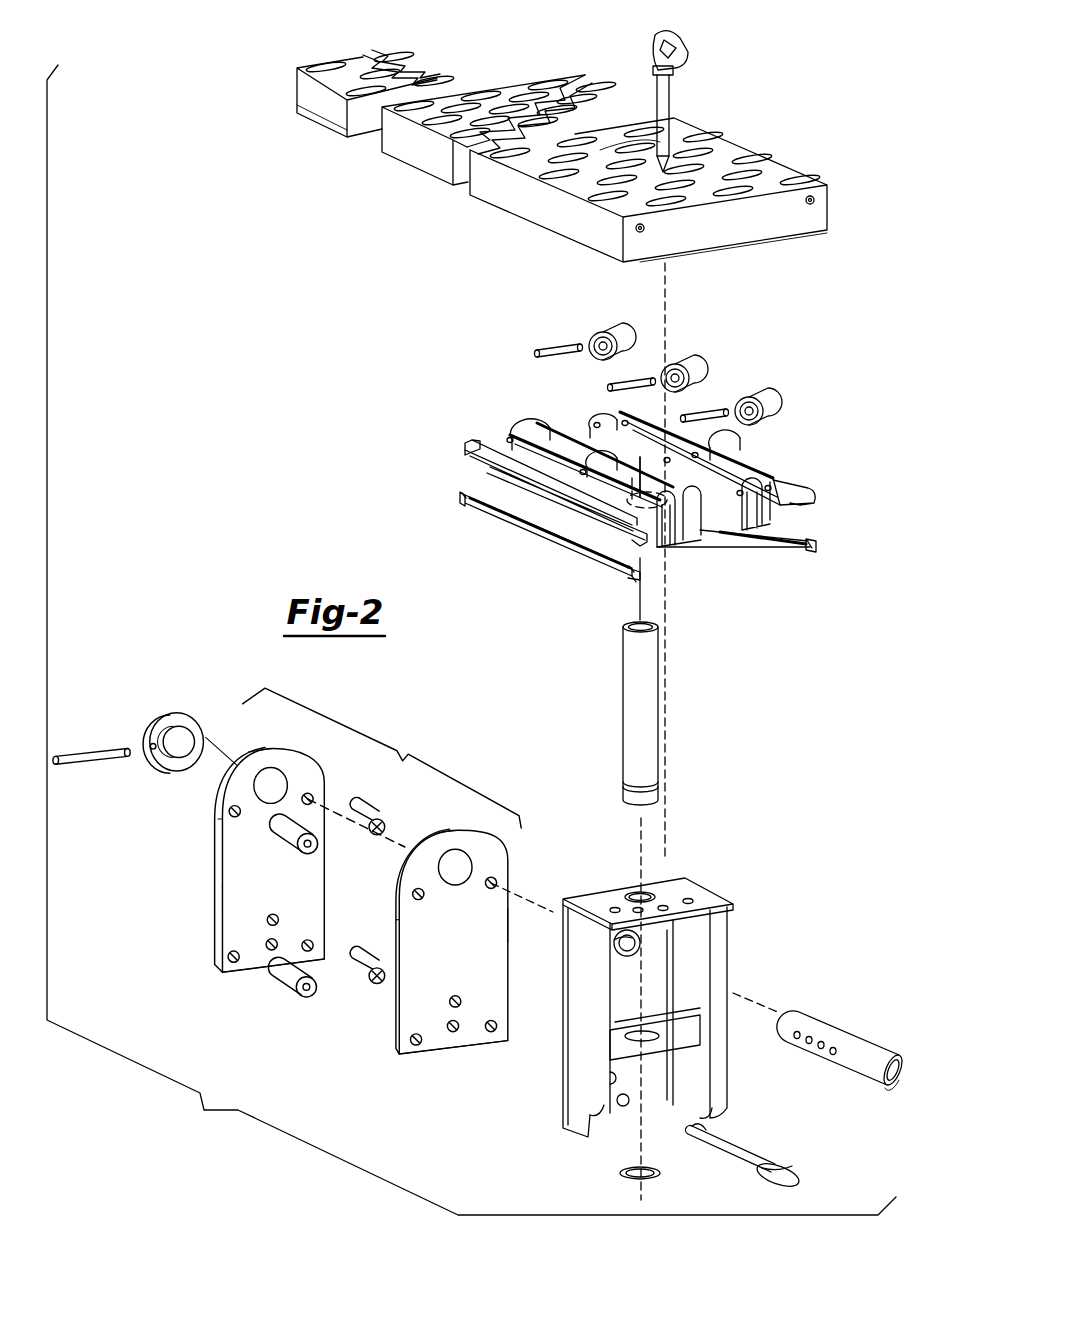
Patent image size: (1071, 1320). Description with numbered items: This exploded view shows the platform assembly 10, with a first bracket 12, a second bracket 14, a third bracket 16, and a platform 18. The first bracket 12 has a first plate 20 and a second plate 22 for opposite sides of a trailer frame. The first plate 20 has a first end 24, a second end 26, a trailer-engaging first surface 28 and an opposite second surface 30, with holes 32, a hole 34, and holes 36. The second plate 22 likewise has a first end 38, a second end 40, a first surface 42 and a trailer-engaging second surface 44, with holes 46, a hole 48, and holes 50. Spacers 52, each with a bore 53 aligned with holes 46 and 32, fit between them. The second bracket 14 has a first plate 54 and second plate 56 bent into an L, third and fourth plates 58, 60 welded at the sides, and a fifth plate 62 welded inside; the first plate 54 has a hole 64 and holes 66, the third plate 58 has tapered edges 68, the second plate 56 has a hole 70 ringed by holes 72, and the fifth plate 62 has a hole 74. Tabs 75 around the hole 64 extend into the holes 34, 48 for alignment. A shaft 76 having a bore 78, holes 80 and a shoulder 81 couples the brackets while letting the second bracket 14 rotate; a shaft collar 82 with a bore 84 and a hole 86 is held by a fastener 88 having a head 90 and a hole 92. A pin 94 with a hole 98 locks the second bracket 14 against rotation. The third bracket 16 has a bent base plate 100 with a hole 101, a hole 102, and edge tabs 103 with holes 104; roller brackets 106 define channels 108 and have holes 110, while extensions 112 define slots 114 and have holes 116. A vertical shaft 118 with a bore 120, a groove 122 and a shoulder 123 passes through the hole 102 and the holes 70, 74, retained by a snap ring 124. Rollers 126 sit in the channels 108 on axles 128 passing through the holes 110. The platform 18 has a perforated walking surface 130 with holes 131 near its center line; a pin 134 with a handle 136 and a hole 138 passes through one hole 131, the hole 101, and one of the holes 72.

The platform assembly 10 is at (471, 640).
The first bracket 12 is at (382, 758).
The second bracket 14 is at (720, 887).
The third bracket 16 is at (722, 550).
The platform 18 is at (303, 55).
The first plate 20 is at (200, 820).
The second plate 22 is at (358, 1000).
The first end 24 is at (232, 737).
The second end 26 is at (273, 991).
The first surface 28 is at (210, 840).
The second surface 30 is at (200, 805).
The holes 32 is at (283, 782).
The hole 34 is at (255, 770).
The holes 36 is at (250, 910).
The first end 38 is at (444, 812).
The second end 40 is at (453, 1074).
The first surface 42 is at (519, 926).
The second surface 44 is at (358, 890).
The holes 46 is at (800, 1172).
The hole 48 is at (420, 840).
The holes 50 is at (465, 989).
The spacers 52 is at (283, 820).
The bore 53 is at (340, 805).
The first plate 54 is at (690, 960).
The second plate 56 is at (705, 890).
The third plate 58 is at (580, 1075).
The fourth plate 60 is at (712, 963).
The fifth plate 62 is at (680, 1025).
The hole 64 is at (640, 945).
The holes 66 is at (612, 1080).
The tapered edges 68 is at (725, 1020).
The hole 70 is at (640, 890).
The holes 72 is at (615, 906).
The hole 74 is at (645, 1030).
The tabs 75 is at (620, 955).
The shaft 76 is at (860, 1042).
The bore 78 is at (895, 1085).
The holes 80 is at (822, 1048).
The shoulder 81 is at (900, 1057).
The shaft collar 82 is at (162, 705).
The bore 84 is at (170, 730).
The hole 86 is at (135, 735).
The fastener 88 is at (80, 745).
The head 90 is at (55, 745).
The hole 92 is at (115, 742).
The pin 94 is at (737, 1150).
The hole 98 is at (698, 1140).
The base plate 100 is at (722, 520).
The hole 101 is at (680, 496).
The hole 102 is at (638, 478).
The tabs 103 is at (462, 452).
The holes 104 is at (470, 458).
The roller brackets 106 is at (505, 432).
The channels 108 is at (525, 420).
The holes 110 is at (597, 422).
The extensions 112 is at (470, 515).
The slots 114 is at (642, 572).
The holes 116 is at (462, 500).
The shaft 118 is at (655, 722).
The bore 120 is at (650, 622).
The groove 122 is at (658, 783).
The shoulder 123 is at (624, 623).
The snap ring 124 is at (620, 1175).
The rollers 126 is at (612, 330).
The axles 128 is at (560, 345).
The walking surface 130 is at (497, 43).
The holes 131 is at (425, 62).
The pin 134 is at (668, 100).
The handle 136 is at (690, 50).
The hole 138 is at (640, 146).